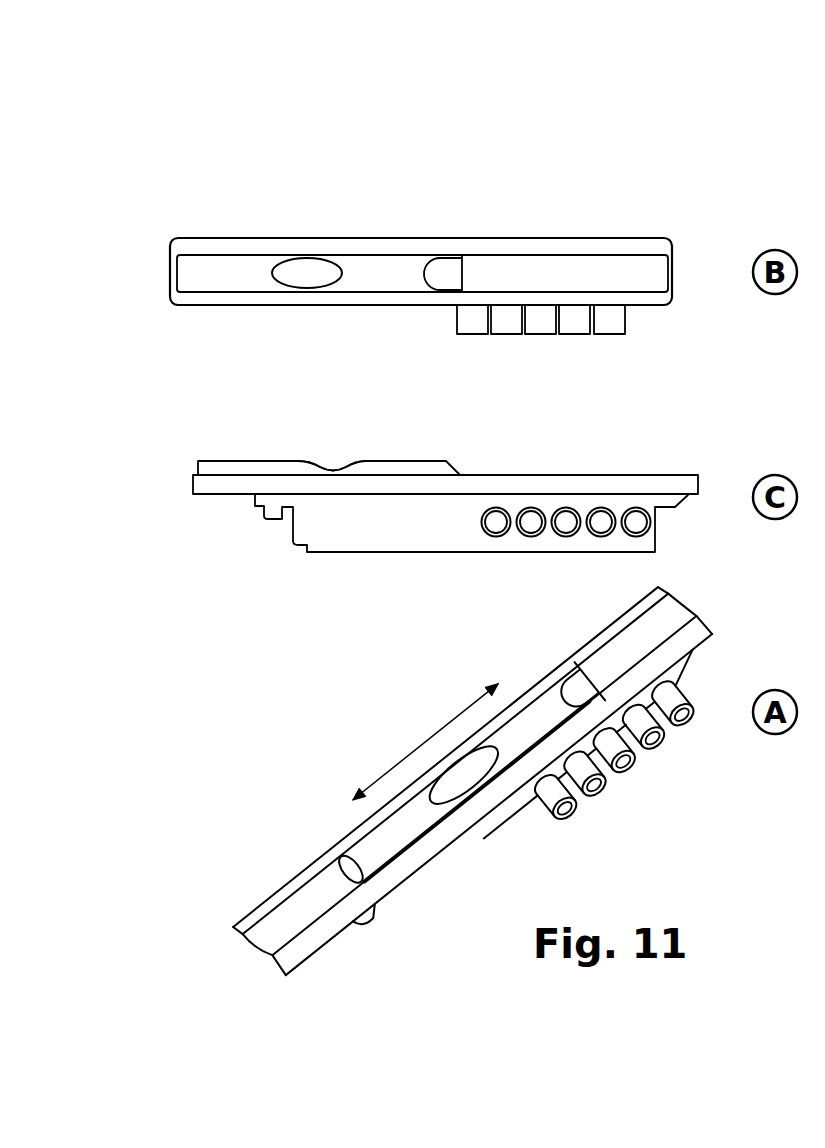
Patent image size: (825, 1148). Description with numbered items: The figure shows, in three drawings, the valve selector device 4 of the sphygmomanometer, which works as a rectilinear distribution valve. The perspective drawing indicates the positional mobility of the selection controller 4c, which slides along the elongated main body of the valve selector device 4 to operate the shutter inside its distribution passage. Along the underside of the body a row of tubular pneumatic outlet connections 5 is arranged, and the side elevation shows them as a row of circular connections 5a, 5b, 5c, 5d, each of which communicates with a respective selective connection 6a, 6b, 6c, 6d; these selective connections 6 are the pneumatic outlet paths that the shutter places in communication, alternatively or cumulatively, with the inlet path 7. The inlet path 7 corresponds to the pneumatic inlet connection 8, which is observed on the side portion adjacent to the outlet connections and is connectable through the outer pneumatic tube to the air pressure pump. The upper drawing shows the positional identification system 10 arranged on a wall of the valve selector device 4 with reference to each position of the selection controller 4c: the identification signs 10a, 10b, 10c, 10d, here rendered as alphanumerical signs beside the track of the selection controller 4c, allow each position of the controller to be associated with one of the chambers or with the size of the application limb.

The valve selector device 4 is at (238, 554).
The selection controller 4c is at (306, 272).
The pneumatic outlet connections 5 is at (534, 826).
The pneumatic outlet connection 5a is at (616, 508).
The pneumatic outlet connection 5b is at (581, 508).
The pneumatic outlet connection 5c is at (548, 508).
The pneumatic outlet connection 5d is at (506, 509).
The selective connections / pneumatic outlet paths 6 is at (606, 799).
The selective connection 6a is at (601, 521).
The selective connection 6b is at (566, 521).
The selective connection 6c is at (530, 521).
The selective connection 6d is at (494, 521).
The inlet path 7 is at (641, 521).
The pneumatic inlet connection 8 is at (657, 508).
The positional identification system 10 is at (600, 270).
The identification sign 10a is at (583, 258).
The identification sign 10b is at (543, 257).
The identification sign 10c is at (503, 257).
The identification sign 10d is at (473, 256).